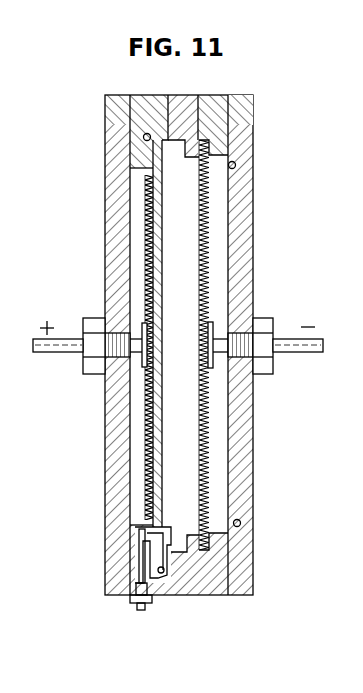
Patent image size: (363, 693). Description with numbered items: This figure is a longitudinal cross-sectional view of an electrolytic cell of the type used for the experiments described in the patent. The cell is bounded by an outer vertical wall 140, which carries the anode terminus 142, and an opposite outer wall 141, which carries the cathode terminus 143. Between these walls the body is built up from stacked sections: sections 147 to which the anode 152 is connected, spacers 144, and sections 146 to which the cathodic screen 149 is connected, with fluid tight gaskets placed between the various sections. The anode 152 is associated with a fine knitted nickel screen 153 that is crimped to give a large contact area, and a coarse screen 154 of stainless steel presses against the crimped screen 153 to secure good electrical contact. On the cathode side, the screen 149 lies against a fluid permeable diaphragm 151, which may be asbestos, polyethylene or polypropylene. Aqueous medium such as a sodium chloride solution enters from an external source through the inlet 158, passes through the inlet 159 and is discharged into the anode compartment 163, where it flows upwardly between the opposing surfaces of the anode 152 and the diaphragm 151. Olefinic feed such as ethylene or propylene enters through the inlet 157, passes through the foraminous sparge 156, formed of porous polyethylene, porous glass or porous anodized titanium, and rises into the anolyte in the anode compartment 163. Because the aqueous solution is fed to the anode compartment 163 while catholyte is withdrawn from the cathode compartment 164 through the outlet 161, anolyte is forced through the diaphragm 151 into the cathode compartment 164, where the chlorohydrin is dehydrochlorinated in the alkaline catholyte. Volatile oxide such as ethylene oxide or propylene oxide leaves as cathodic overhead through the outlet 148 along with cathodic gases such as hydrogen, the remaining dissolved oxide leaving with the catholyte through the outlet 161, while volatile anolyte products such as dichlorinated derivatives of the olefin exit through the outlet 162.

The outer vertical wall 140 is at (110, 232).
The outer wall 141 is at (248, 252).
The anode terminus 142 is at (46, 353).
The cathode terminus 143 is at (300, 352).
The spacers 144 is at (182, 100).
The sections 146 is at (212, 100).
The sections 147 is at (150, 100).
The outlet 148 is at (236, 165).
The cathodic screen 149 is at (209, 212).
The fluid permeable diaphragm 151 is at (198, 244).
The anode 152 is at (158, 284).
The fine knitted nickel screen 153 is at (147, 200).
The coarse screen 154 is at (147, 266).
The foraminous sparge 156 is at (163, 545).
The inlet 157 is at (164, 573).
The inlet 158 is at (140, 611).
The inlet 159 is at (140, 546).
The outlet 161 is at (240, 525).
The outlet 162 is at (144, 138).
The anode compartment 163 is at (193, 386).
The cathode compartment 164 is at (218, 302).